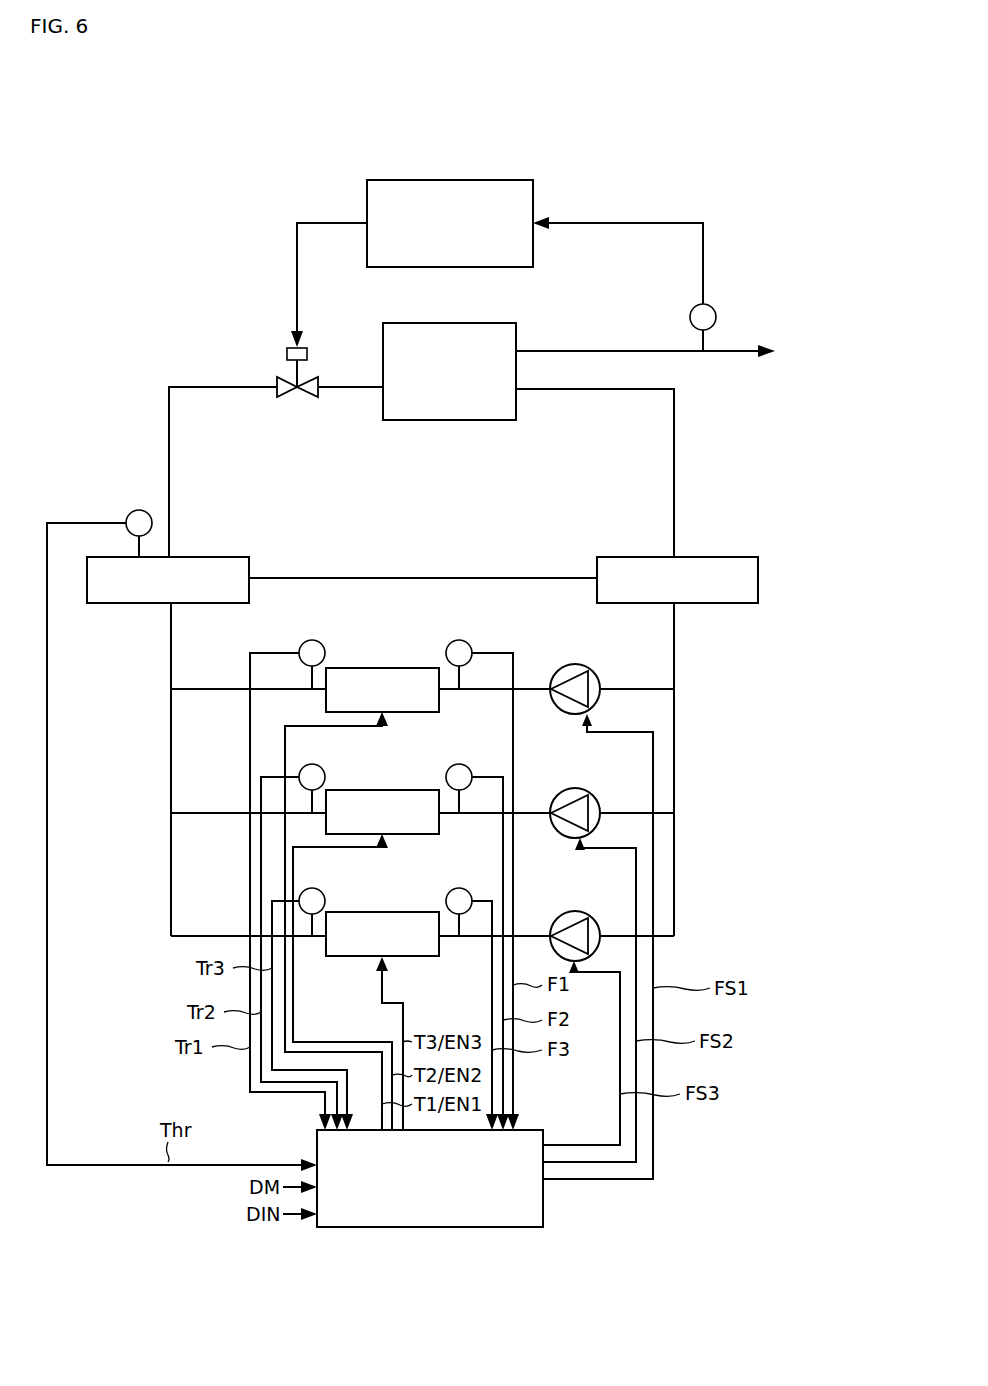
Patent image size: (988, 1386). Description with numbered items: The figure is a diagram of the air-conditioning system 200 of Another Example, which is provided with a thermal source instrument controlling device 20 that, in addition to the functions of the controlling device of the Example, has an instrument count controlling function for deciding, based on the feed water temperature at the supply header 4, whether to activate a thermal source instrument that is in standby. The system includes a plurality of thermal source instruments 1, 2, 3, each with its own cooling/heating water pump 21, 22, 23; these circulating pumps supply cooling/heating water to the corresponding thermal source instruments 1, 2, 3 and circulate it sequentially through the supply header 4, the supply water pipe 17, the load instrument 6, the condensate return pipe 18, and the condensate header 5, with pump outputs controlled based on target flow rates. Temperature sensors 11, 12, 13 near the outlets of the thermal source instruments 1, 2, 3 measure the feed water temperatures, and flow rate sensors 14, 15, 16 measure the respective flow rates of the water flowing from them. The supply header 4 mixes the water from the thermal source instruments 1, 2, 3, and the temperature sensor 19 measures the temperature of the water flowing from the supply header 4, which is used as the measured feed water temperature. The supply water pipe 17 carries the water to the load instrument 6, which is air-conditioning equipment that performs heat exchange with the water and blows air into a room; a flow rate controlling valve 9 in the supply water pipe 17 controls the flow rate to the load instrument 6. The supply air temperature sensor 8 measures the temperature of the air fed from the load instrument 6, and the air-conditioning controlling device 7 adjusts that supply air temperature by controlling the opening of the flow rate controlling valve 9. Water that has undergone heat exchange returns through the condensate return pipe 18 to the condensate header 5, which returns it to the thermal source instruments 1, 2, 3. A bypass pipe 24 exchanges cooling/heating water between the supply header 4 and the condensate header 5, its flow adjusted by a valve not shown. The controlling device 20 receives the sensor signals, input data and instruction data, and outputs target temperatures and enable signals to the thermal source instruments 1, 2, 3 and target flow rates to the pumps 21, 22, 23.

The air-conditioning system 200 is at (788, 136).
The thermal source instrument 1 is at (416, 668).
The thermal source instrument 2 is at (416, 790).
The thermal source instrument 3 is at (416, 912).
The supply header 4 is at (249, 557).
The condensate header 5 is at (758, 557).
The load instrument 6 is at (516, 323).
The air-conditioning controlling device 7 is at (533, 180).
The supply air temperature sensor 8 is at (716, 312).
The flow rate controlling valve 9 is at (307, 352).
The temperature sensor 11 is at (321, 644).
The temperature sensor 12 is at (321, 768).
The temperature sensor 13 is at (321, 892).
The flow rate sensor 14 is at (459, 640).
The flow rate sensor 15 is at (459, 764).
The flow rate sensor 16 is at (459, 888).
The supply water pipe 17 is at (169, 503).
The condensate return pipe 18 is at (674, 512).
The temperature sensor 19 is at (139, 508).
The thermal source instrument controlling device 20 is at (543, 1130).
The cooling/heating water pump 21 is at (575, 664).
The cooling/heating water pump 22 is at (575, 788).
The cooling/heating water pump 23 is at (575, 911).
The bypass pipe 24 is at (436, 578).